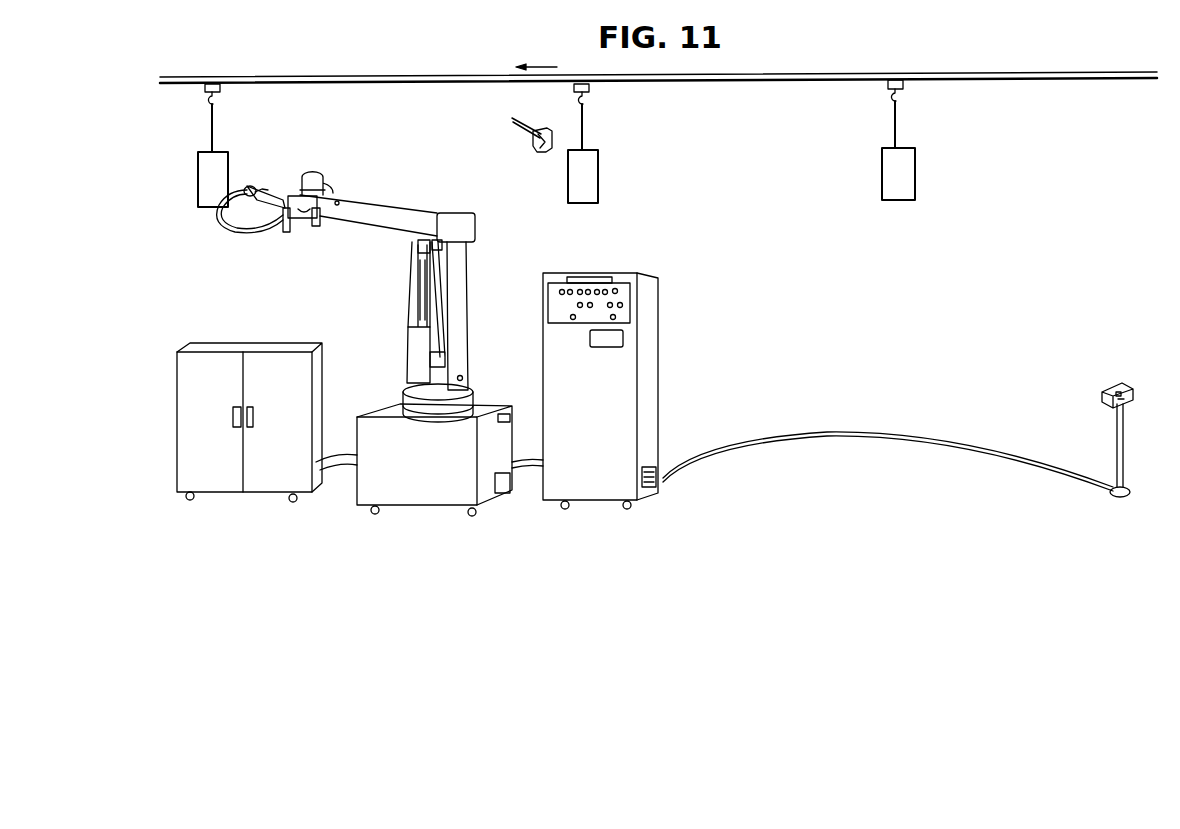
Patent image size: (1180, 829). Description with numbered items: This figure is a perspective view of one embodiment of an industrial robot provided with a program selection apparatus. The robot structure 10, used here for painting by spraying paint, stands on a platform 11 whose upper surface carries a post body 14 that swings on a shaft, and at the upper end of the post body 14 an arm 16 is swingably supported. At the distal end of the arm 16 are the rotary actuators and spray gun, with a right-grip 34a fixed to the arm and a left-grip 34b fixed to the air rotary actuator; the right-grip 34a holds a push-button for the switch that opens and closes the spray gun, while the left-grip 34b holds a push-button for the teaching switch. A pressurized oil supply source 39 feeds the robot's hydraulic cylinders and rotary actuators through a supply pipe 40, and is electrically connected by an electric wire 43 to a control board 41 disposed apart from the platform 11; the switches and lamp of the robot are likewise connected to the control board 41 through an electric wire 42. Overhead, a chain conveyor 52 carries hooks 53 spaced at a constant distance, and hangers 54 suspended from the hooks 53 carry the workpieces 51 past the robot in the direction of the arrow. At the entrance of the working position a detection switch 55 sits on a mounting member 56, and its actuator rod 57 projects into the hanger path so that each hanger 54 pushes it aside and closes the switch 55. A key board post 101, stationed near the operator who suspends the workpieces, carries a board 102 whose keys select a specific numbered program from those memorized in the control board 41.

The robot structure 10 is at (347, 252).
The platform 11 is at (392, 410).
The post body 14 is at (408, 303).
The arm 16 is at (384, 205).
The right-grip 34a is at (317, 227).
The left-grip 34b is at (285, 233).
The pressurized oil supply source 39 is at (273, 343).
The supply pipe 40 is at (341, 472).
The control board 41 is at (627, 274).
The electric wire 42 is at (530, 458).
The electric wire 43 is at (343, 455).
The workpiece 51 is at (198, 175).
The chain conveyor 52 is at (722, 82).
The hook 53 is at (207, 101).
The hanger 54 is at (214, 126).
The detection switch 55 is at (546, 126).
The mounting member 56 is at (536, 148).
The actuator rod 57 is at (525, 132).
The key board post 101 is at (1120, 378).
The board 102 is at (1131, 400).